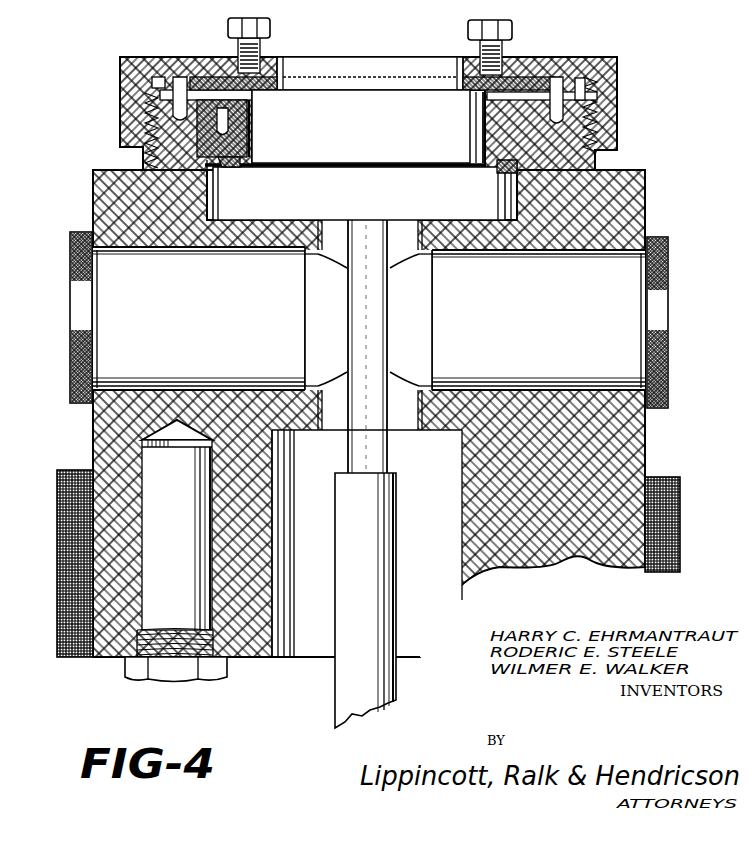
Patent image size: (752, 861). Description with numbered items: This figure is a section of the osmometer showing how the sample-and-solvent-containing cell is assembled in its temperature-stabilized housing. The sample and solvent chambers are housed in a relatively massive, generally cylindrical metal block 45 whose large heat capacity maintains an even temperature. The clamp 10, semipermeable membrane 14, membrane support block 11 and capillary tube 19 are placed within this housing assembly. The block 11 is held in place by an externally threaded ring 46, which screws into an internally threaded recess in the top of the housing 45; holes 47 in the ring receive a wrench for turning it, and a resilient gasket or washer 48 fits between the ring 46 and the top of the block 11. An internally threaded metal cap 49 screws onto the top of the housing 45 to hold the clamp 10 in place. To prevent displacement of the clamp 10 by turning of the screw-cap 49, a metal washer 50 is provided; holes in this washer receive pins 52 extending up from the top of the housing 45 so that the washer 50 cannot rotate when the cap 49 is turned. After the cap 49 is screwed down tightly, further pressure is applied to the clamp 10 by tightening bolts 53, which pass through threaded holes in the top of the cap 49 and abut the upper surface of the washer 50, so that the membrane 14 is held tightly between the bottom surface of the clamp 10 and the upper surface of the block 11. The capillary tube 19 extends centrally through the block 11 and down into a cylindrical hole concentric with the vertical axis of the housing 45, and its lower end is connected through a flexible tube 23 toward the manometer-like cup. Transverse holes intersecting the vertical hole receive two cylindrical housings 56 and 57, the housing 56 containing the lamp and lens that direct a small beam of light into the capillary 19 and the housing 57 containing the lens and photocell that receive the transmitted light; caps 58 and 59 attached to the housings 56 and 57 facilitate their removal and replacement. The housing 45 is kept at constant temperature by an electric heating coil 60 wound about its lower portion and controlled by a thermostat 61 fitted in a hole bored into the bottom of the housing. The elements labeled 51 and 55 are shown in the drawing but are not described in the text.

The clamp 10 is at (378, 132).
The membrane support block 11 is at (378, 202).
The semipermeable membrane 14 is at (338, 164).
The capillary tube 19 is at (349, 320).
The flexible tube 23 is at (397, 493).
The metal block 45 is at (93, 182).
The externally threaded ring 46 is at (240, 142).
The holes 47 is at (227, 119).
The resilient gasket or washer 48 is at (492, 174).
The metal cap 49 is at (130, 56).
The metal washer 50 is at (274, 76).
The lug 51 is at (165, 82).
The pins 52 is at (182, 80).
The bolts 53 is at (497, 6).
The bolt 55 is at (265, 18).
The cylindrical housing 56 is at (208, 307).
The cylindrical housing 57 is at (529, 301).
The cap 58 is at (72, 292).
The cap 59 is at (667, 258).
The electric heating coil 60 is at (57, 489).
The thermostat 61 is at (132, 671).